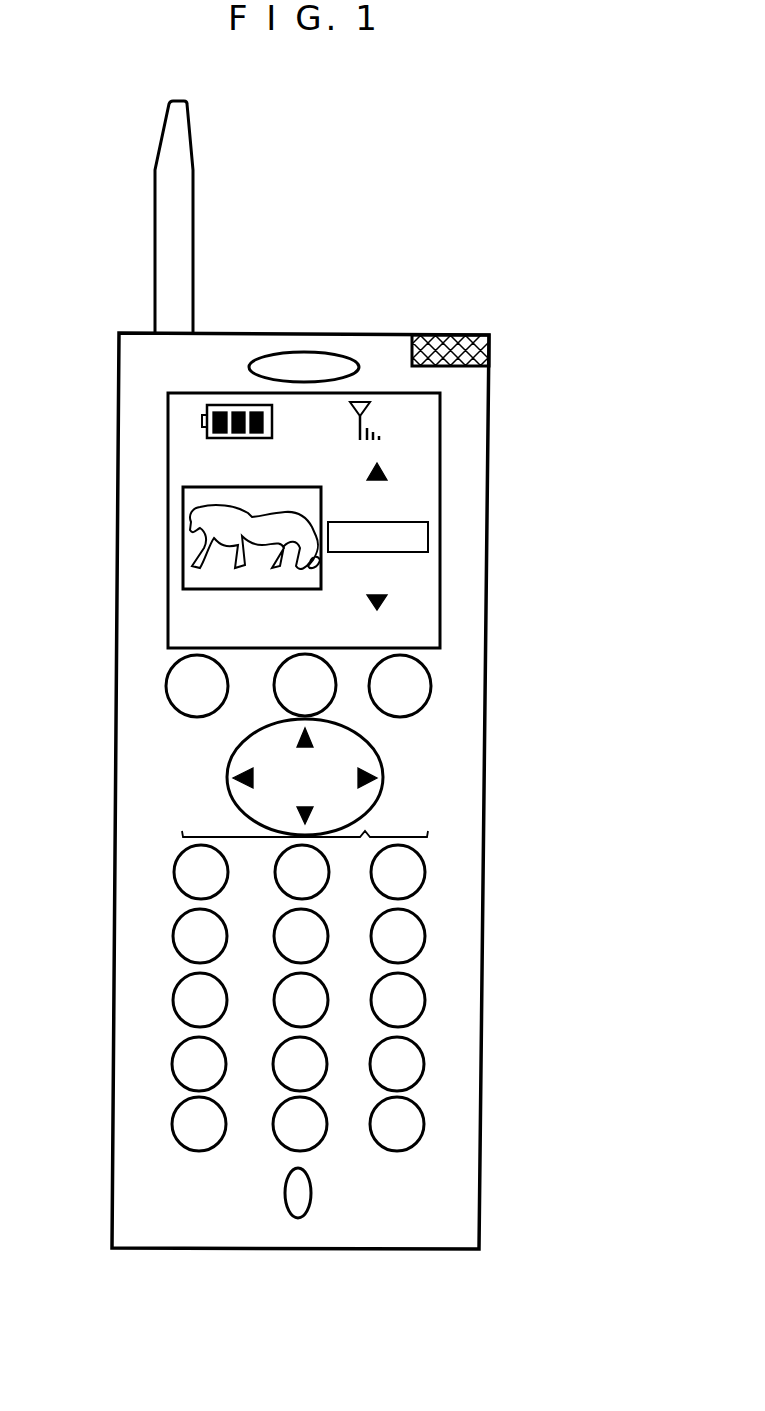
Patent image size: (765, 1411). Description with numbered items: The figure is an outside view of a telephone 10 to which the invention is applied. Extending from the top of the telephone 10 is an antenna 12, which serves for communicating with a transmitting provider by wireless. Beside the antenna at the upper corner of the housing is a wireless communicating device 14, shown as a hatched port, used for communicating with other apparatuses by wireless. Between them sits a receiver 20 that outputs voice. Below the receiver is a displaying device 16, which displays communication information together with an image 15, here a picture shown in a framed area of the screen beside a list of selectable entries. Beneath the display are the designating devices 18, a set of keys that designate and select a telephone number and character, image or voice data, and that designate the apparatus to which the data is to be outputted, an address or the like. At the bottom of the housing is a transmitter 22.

The telephone 10 is at (508, 778).
The antenna 12 is at (193, 238).
The wireless communicating device 14 is at (435, 335).
The image 15 is at (187, 522).
The displaying device 16 is at (187, 613).
The designating devices 18 is at (277, 700).
The receiver 20 is at (318, 352).
The transmitter 22 is at (313, 1193).